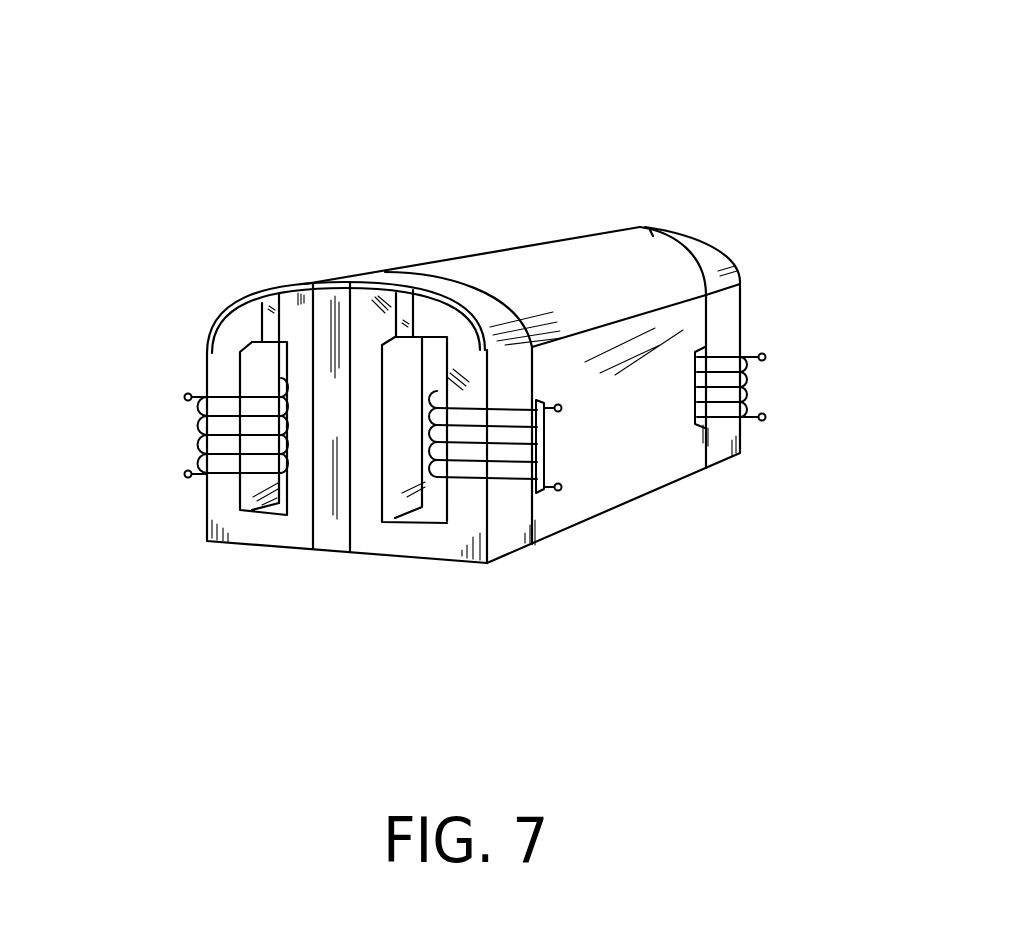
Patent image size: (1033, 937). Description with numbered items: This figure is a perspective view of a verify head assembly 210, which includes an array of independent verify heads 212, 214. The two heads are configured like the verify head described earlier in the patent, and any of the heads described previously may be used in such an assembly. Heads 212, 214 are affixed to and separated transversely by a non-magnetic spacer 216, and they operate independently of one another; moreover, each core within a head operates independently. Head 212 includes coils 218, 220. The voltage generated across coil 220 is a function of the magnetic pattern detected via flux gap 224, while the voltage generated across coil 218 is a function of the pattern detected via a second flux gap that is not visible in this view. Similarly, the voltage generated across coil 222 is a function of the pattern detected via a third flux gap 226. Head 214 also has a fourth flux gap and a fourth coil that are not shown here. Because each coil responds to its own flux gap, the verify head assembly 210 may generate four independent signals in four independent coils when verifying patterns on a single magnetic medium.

The verify head assembly 210 is at (474, 342).
The verify head 212 is at (370, 540).
The verify head 214 is at (722, 443).
The non-magnetic spacer 216 is at (557, 260).
The coil 218 is at (193, 438).
The coil 220 is at (562, 443).
The coil 222 is at (758, 389).
The flux gap 224 is at (420, 284).
The third flux gap 226 is at (657, 234).